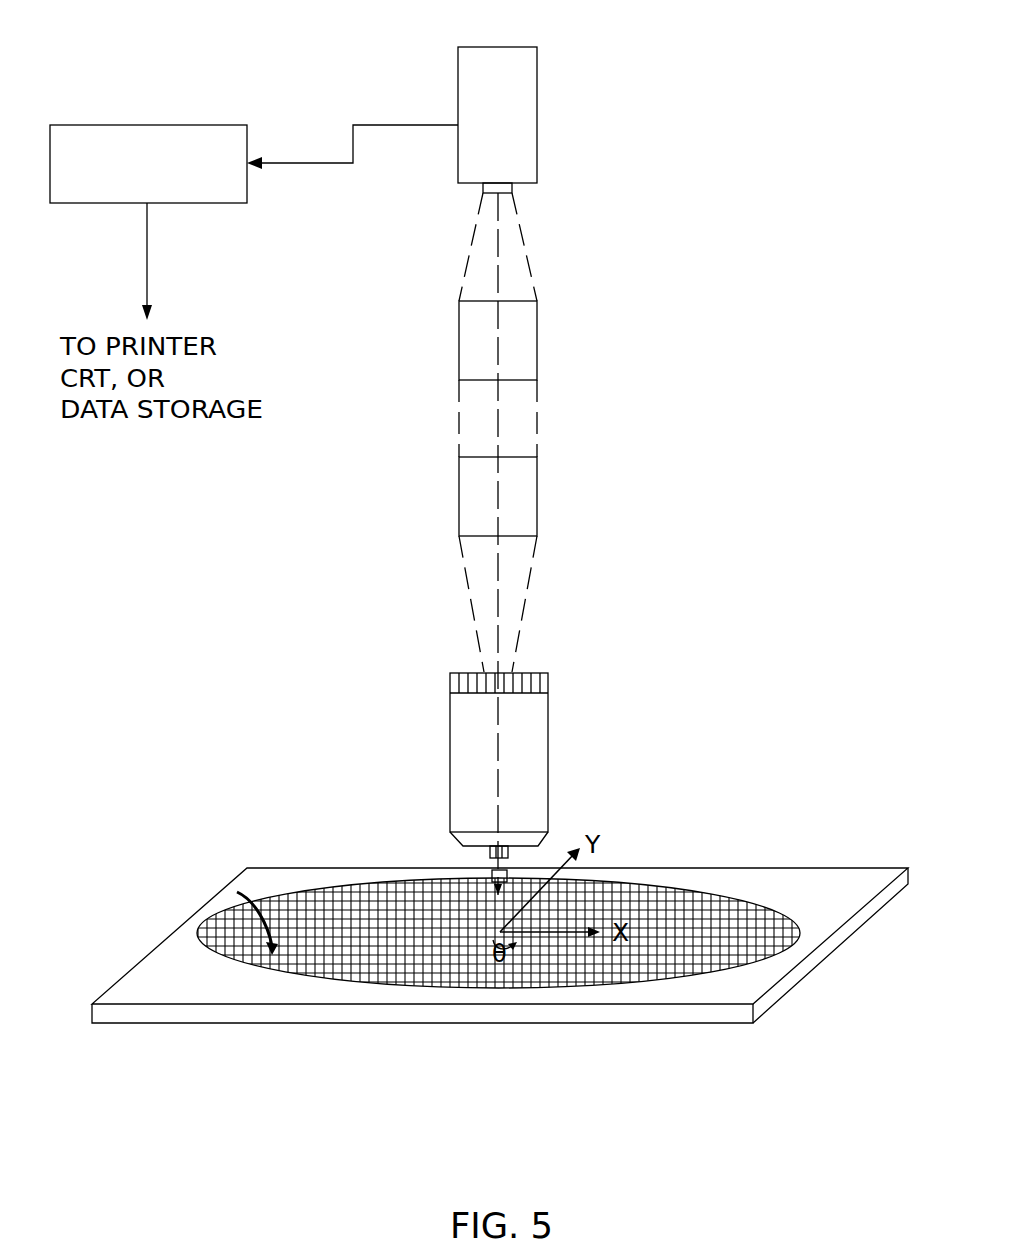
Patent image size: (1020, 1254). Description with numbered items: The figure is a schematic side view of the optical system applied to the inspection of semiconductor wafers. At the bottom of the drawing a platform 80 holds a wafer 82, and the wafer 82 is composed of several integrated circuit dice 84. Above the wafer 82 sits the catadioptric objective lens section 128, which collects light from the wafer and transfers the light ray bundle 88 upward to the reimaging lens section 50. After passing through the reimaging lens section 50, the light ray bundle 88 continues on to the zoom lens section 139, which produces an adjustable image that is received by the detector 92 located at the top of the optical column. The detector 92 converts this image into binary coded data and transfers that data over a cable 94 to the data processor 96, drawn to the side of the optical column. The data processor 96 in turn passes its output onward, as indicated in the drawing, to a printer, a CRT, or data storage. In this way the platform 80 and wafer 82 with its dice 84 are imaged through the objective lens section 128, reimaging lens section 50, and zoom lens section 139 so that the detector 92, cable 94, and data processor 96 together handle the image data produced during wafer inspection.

The detector 92 is at (458, 67).
The data processor 96 is at (148, 125).
The cable 94 is at (313, 163).
The zoom lens section 139 is at (537, 340).
The reimaging lens section 50 is at (537, 497).
The light ray bundle 88 is at (525, 615).
The catadioptric objective lens section 128 is at (450, 750).
The platform 80 is at (232, 878).
The wafer 82 is at (327, 888).
The integrated circuit dice 84 is at (237, 892).